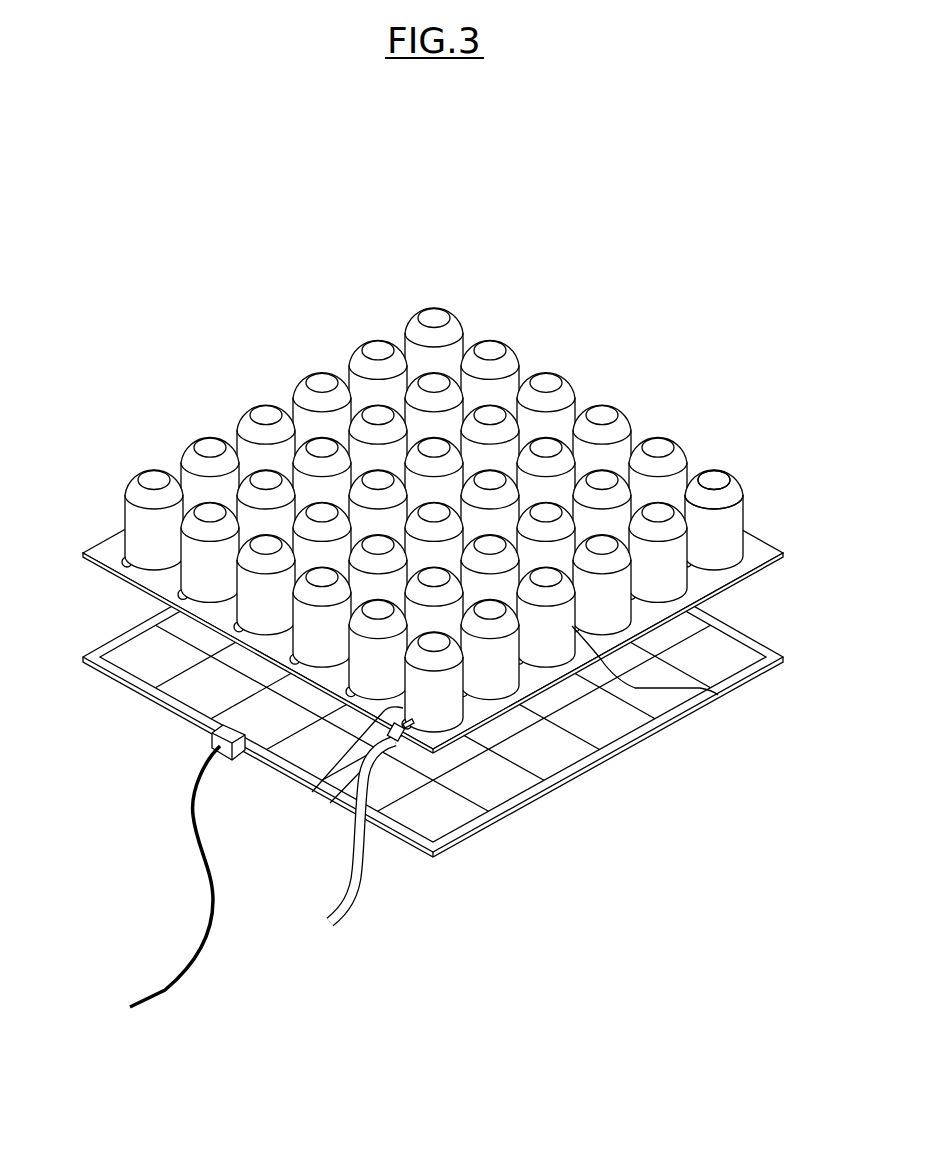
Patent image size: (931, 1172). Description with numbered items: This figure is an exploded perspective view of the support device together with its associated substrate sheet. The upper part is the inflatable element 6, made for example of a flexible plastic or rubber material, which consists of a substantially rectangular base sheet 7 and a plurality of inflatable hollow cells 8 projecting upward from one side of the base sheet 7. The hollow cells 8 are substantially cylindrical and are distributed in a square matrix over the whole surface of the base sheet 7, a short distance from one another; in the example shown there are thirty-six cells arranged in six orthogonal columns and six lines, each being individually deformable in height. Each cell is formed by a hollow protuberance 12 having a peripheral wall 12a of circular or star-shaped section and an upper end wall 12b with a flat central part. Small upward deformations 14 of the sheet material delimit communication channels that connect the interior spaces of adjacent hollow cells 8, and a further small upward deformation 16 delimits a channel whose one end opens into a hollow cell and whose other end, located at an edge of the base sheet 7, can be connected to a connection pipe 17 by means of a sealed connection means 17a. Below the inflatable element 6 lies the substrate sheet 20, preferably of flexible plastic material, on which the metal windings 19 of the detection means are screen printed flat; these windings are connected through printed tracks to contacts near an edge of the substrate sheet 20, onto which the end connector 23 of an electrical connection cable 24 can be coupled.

The inflatable element 6 is at (468, 520).
The base sheet 7 is at (128, 570).
The inflatable hollow cells 8 is at (260, 398).
The hollow protuberances 12 is at (729, 537).
The peripheral wall 12a is at (742, 515).
The upper end wall 12b is at (731, 490).
The small upward deformations 14 is at (720, 695).
The small upward deformation 16 is at (330, 778).
The connection pipe 17 is at (350, 898).
The sealed connection means 17a is at (327, 803).
The metal windings 19 is at (185, 692).
The substrate sheet 20 is at (432, 860).
The end connector 23 is at (217, 742).
The electrical connection cable 24 is at (210, 885).